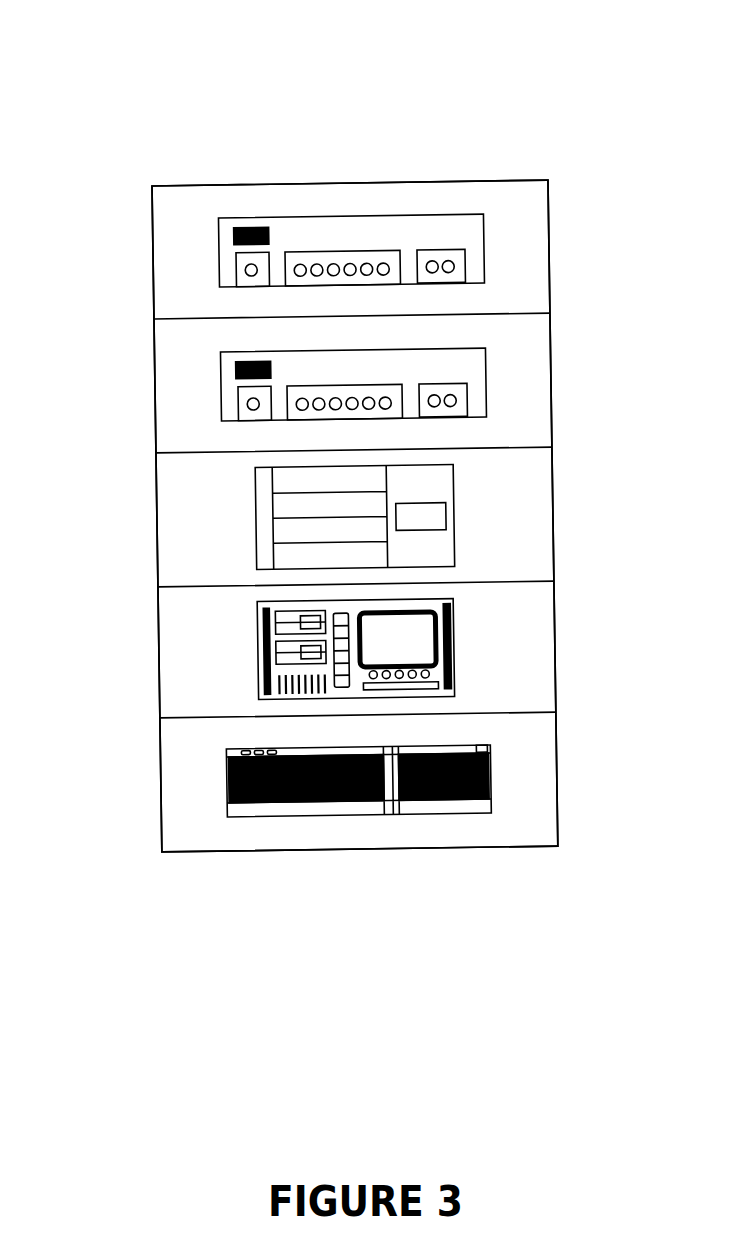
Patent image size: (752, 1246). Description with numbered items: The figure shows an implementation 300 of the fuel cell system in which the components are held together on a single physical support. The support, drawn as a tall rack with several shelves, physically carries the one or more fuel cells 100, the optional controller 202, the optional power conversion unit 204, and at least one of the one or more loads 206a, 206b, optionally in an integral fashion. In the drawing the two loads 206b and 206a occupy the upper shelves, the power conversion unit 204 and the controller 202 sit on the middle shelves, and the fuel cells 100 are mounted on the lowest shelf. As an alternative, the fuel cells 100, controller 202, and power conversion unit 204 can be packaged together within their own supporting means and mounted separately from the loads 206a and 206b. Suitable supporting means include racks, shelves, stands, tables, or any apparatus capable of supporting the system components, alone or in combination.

The implementation 300 is at (346, 98).
The load 206b is at (218, 252).
The load 206a is at (220, 385).
The power conversion unit 204 is at (255, 518).
The controller 202 is at (257, 650).
The fuel cell 100 is at (226, 770).